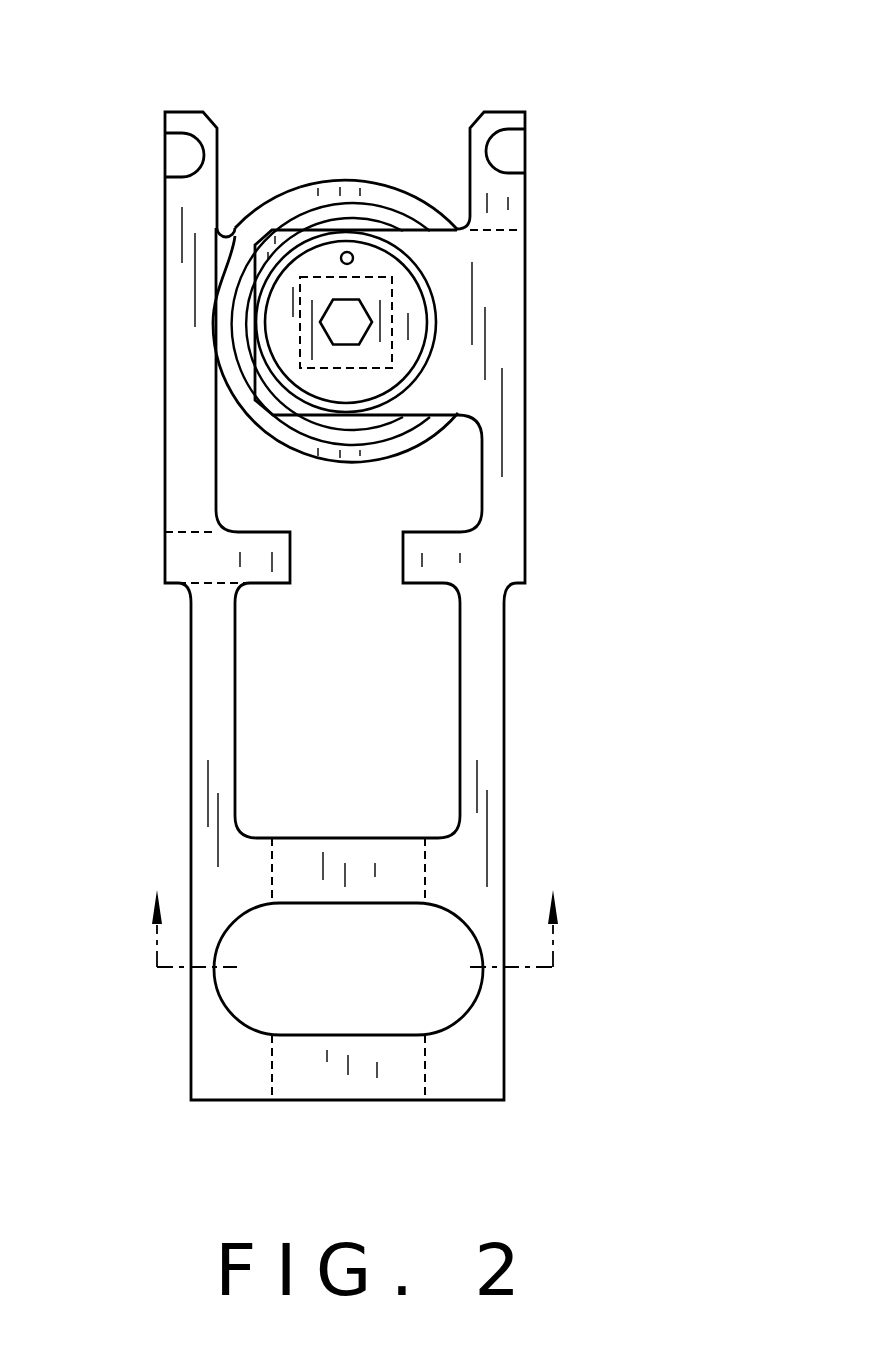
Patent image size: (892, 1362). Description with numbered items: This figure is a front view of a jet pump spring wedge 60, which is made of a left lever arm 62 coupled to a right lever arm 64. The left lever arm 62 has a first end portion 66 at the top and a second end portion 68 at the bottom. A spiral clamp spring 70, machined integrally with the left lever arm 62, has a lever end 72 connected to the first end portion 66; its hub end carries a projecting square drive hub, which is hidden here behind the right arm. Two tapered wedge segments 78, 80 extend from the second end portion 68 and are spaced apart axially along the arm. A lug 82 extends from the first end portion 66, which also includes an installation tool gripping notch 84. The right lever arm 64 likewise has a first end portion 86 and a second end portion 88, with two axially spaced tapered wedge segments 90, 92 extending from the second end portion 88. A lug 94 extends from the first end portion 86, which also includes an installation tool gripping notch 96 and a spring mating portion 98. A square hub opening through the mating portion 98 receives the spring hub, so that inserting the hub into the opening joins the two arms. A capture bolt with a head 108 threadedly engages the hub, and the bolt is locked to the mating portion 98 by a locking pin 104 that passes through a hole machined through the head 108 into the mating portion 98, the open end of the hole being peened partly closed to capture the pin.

The jet pump spring wedge 60 is at (630, 155).
The left lever arm 62 is at (192, 112).
The right lever arm 64 is at (507, 112).
The first end portion 66 is at (164, 318).
The second end portion 68 is at (192, 1058).
The spiral clamp spring 70 is at (338, 178).
The lever end 72 is at (255, 207).
The tapered wedge segment 78 is at (258, 837).
The tapered wedge segment 80 is at (257, 1034).
The lug 82 is at (274, 588).
The installation tool gripping notch 84 is at (173, 159).
The first end portion 86 is at (527, 343).
The second end portion 88 is at (506, 1053).
The tapered wedge segment 90 is at (435, 837).
The tapered wedge segment 92 is at (442, 1034).
The lug 94 is at (427, 584).
The installation tool gripping notch 96 is at (510, 152).
The spring mating portion 98 is at (450, 260).
The locking pin 104 is at (354, 257).
The head 108 is at (427, 367).